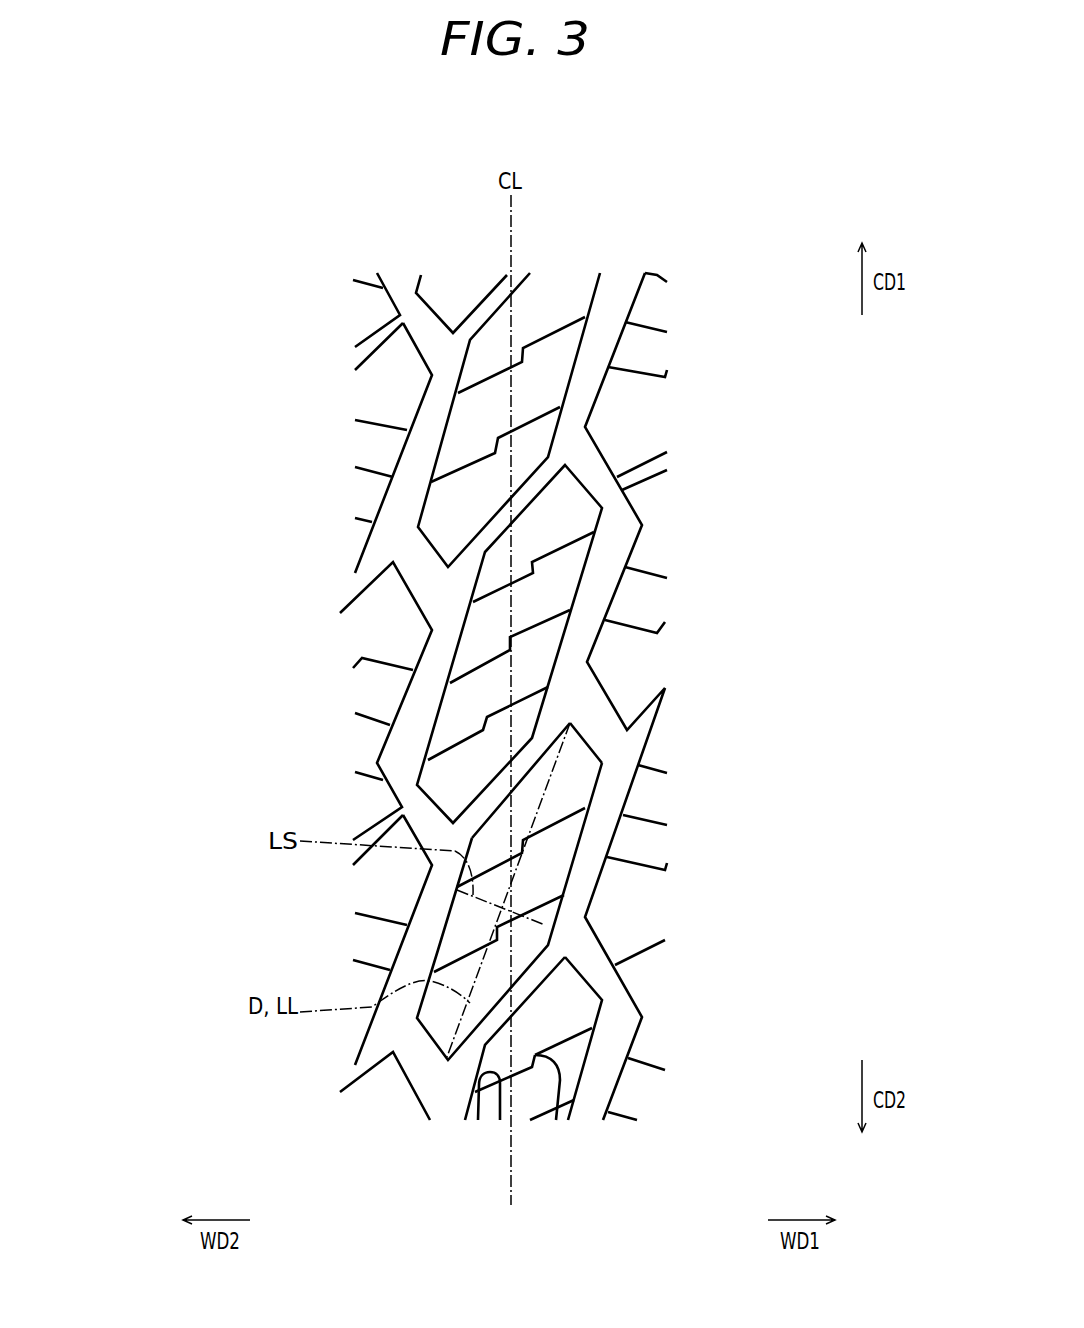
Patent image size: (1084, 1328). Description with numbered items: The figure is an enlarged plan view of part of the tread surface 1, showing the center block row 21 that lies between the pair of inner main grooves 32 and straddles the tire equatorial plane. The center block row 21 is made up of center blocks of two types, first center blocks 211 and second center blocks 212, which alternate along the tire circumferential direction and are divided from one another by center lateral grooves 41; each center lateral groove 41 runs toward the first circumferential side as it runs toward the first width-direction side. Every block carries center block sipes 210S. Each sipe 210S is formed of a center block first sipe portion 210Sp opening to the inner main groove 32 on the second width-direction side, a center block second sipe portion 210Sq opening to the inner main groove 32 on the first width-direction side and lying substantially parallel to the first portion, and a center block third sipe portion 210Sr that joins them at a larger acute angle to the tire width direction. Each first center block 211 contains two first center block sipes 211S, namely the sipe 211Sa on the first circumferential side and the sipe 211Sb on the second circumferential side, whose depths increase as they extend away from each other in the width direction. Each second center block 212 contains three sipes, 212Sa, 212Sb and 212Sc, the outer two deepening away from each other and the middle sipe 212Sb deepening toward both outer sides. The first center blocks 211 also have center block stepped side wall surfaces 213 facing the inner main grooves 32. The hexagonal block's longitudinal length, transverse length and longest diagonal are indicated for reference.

The tread surface 1 is at (772, 148).
The center block row 21 is at (556, 256).
The inner main groove 32 is at (396, 262).
The center lateral groove 41 is at (615, 475).
The first center block 211 is at (549, 368).
The second center block 212 is at (556, 577).
The center block stepped side wall surface 213 is at (588, 743).
The center block sipe 210S is at (493, 1101).
The center block first sipe portion 210Sp is at (476, 1096).
The center block second sipe portion 210Sq is at (576, 1032).
The center block third sipe portion 210Sr is at (558, 1108).
The first center block sipe 211S is at (463, 965).
The first center block sipe 211Sa is at (490, 372).
The first center block sipe 211Sb is at (462, 467).
The second center block sipe 212Sa is at (555, 547).
The second center block sipe 212Sb is at (548, 620).
The second center block sipe 212Sc is at (515, 705).